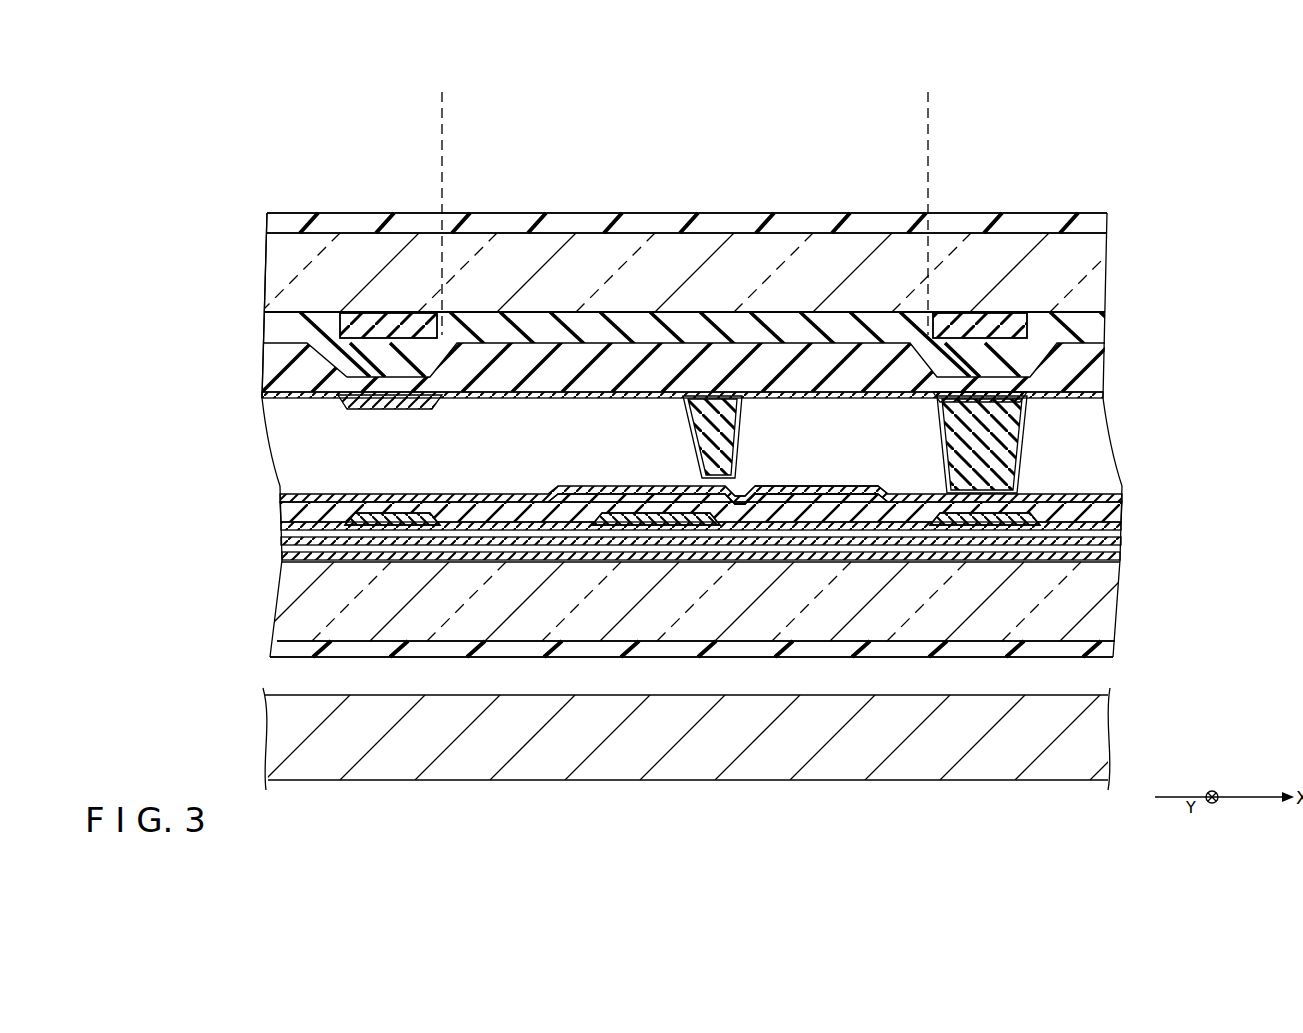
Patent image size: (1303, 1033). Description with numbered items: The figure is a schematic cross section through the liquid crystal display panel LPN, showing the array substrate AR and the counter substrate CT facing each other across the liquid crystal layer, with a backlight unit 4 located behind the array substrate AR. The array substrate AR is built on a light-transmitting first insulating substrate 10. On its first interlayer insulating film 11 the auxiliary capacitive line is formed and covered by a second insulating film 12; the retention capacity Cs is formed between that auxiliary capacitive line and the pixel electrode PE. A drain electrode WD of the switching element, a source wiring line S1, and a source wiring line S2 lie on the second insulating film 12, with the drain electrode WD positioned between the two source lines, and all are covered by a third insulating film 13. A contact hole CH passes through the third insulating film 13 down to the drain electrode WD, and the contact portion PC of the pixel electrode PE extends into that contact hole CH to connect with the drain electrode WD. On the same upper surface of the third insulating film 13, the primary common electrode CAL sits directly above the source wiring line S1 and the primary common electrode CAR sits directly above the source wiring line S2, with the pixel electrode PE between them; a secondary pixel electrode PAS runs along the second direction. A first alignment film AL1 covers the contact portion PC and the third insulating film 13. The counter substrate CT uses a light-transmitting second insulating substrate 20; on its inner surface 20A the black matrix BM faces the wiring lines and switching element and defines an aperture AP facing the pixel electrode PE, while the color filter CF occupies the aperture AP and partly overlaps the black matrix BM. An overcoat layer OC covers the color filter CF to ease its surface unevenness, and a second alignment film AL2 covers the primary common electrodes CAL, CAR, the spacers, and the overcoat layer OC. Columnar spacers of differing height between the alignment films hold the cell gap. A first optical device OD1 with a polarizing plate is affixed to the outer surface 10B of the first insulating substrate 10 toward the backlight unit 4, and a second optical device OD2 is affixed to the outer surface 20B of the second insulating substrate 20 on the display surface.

The aperture AP is at (928, 90).
The outer surface of the second insulating substrate 20B is at (326, 214).
The black matrix BM is at (386, 330).
The liquid crystal display panel LPN is at (1130, 213).
The second optical device OD2 is at (272, 216).
The second insulating substrate 20 is at (1100, 267).
The counter substrate CT is at (255, 293).
The color filter CF is at (1100, 326).
The inner surface of the second insulating substrate 20A is at (280, 322).
The overcoat layer OC is at (1100, 363).
The second alignment film AL2 is at (1097, 396).
The liquid crystal layer LQ is at (272, 445).
The primary common electrode CAL is at (410, 410).
The primary common electrode CAR is at (940, 414).
The secondary pixel electrode PAS is at (590, 498).
The contact hole CH is at (706, 488).
The contact portion PC is at (765, 500).
The pixel electrode PE is at (840, 496).
The first alignment film AL1 is at (1075, 496).
The third insulating film 13 is at (1123, 506).
The second insulating film 12 is at (1123, 523).
The retention capacity Cs is at (1123, 541).
The first interlayer insulating film 11 is at (1123, 556).
The first insulating substrate 10 is at (1115, 619).
The array substrate AR is at (270, 595).
The first optical device OD1 is at (270, 655).
The outer surface of the first insulating substrate 10B is at (306, 659).
The source wiring line S1 is at (436, 540).
The drain electrode WD is at (718, 535).
The source wiring line S2 is at (995, 540).
The backlight unit 4 is at (1100, 757).